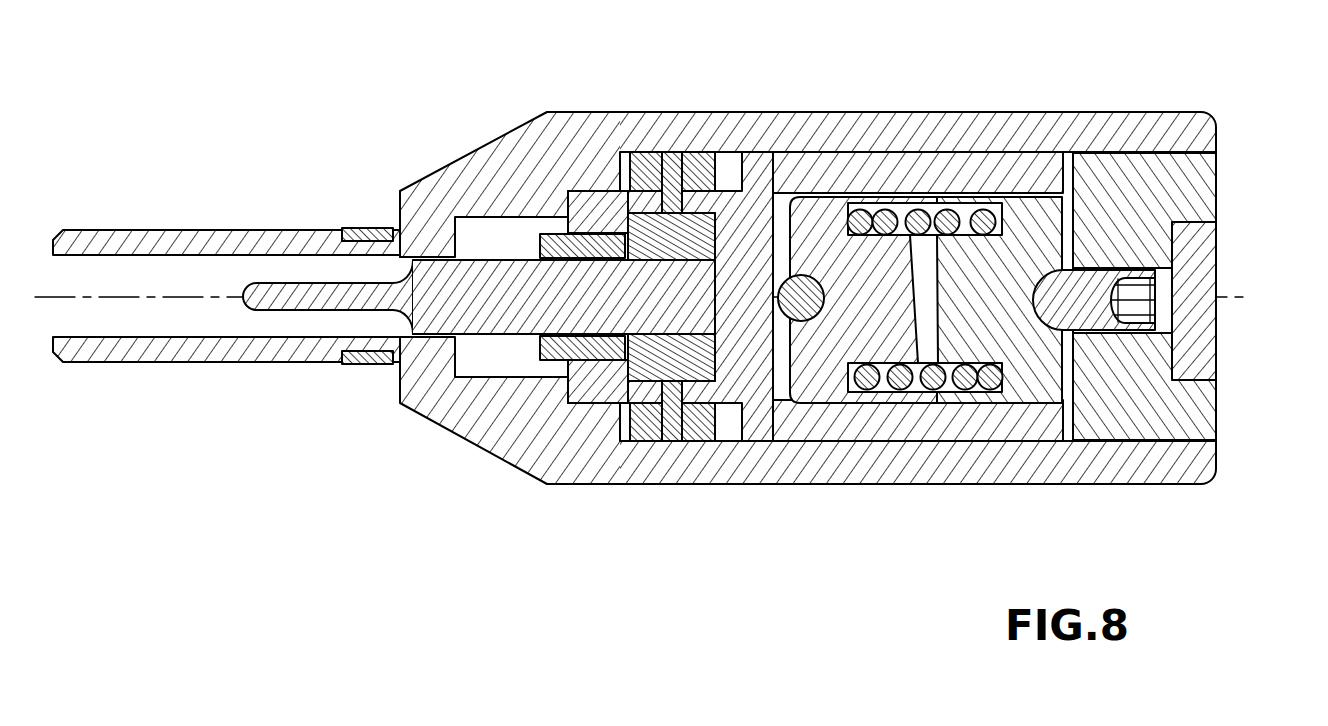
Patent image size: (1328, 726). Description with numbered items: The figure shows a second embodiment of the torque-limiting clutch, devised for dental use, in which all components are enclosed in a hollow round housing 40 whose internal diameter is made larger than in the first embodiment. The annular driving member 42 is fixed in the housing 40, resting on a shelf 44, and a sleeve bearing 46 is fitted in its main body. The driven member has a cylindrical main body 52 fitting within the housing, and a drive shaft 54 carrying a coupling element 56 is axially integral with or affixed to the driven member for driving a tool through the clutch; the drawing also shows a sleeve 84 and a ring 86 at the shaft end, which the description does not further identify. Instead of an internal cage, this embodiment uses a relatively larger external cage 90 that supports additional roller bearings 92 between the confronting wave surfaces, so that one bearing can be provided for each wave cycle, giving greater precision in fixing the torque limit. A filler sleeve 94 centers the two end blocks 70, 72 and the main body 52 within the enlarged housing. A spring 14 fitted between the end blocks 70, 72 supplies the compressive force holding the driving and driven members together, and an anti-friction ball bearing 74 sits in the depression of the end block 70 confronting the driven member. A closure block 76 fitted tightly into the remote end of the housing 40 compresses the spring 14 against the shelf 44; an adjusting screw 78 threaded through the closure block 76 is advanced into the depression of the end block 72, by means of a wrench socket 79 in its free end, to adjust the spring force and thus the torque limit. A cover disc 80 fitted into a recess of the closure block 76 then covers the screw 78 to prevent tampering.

The spring 14 is at (963, 383).
The housing 40 is at (950, 467).
The driving member 42 is at (590, 190).
The shelf 44 is at (566, 200).
The sleeve bearing 46 is at (560, 349).
The main body 52 is at (740, 373).
The drive shaft 54 is at (497, 320).
The coupling element 56 is at (255, 305).
The end block 70 is at (823, 407).
The end block 72 is at (1033, 390).
The anti-friction ball bearing 74 is at (805, 285).
The closure block 76 is at (1192, 190).
The adjusting screw 78 is at (1076, 262).
The wrench socket 79 is at (1125, 293).
The cover disc 80 is at (1203, 257).
The tube 84 is at (213, 246).
The retaining ring 86 is at (366, 228).
The external cage 90 is at (710, 153).
The roller bearings 92 is at (672, 153).
The filler sleeve 94 is at (880, 167).